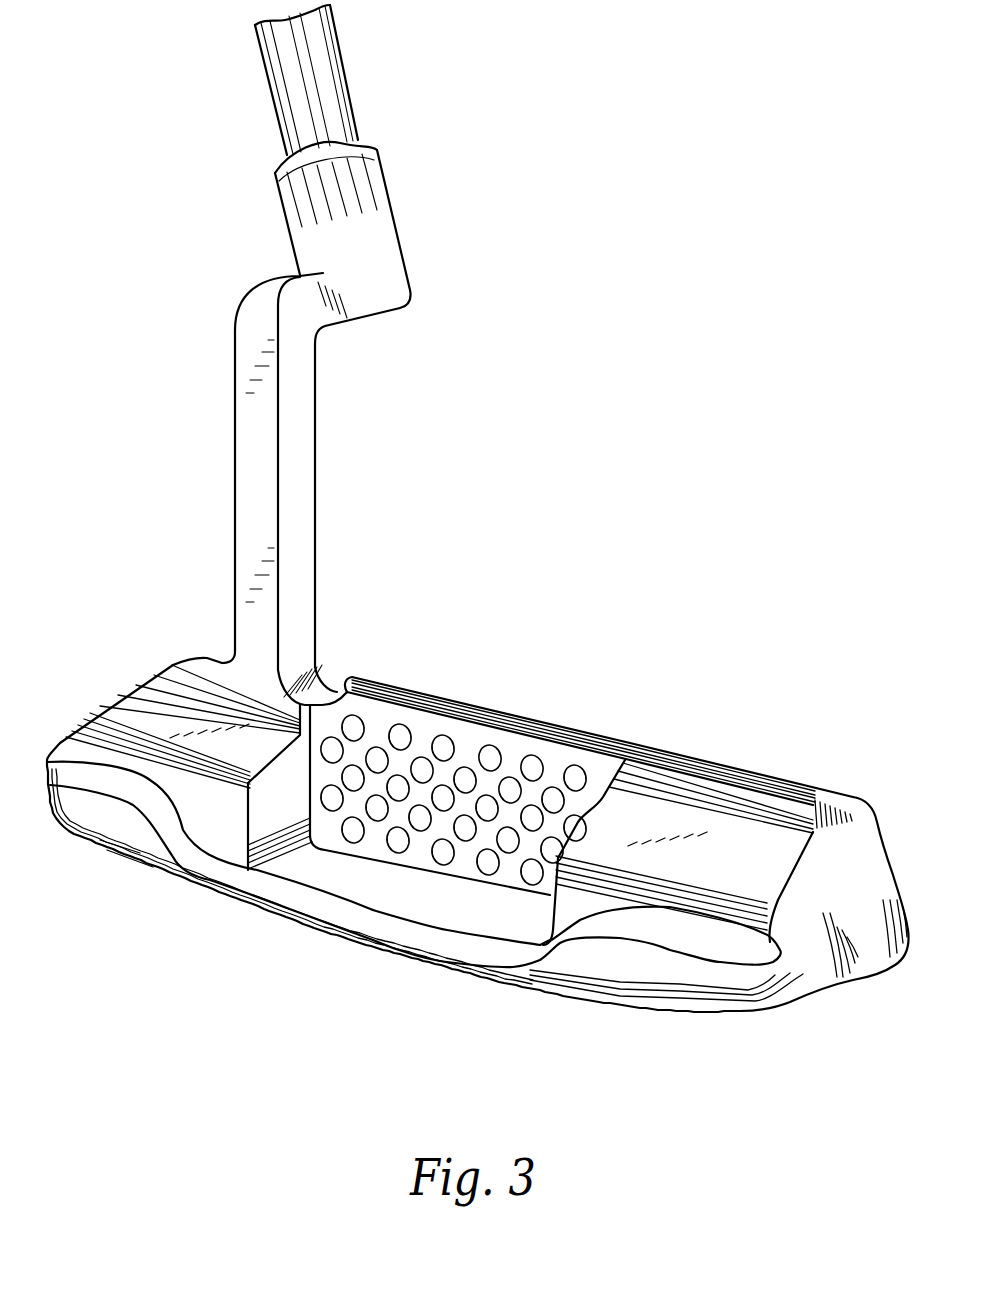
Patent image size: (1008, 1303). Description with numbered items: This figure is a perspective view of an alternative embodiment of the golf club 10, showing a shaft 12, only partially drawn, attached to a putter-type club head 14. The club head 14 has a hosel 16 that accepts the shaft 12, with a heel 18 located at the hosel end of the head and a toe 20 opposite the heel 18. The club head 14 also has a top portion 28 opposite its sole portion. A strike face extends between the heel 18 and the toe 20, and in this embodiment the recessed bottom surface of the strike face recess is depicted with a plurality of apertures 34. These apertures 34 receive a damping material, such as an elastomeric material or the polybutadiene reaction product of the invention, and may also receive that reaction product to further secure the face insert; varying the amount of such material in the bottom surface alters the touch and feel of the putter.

The golf club 10 is at (483, 508).
The shaft 12 is at (327, 72).
The club head 14 is at (580, 809).
The hosel 16 is at (383, 248).
The heel 18 is at (123, 710).
The toe 20 is at (863, 833).
The top portion 28 is at (740, 775).
The apertures 34 is at (443, 853).